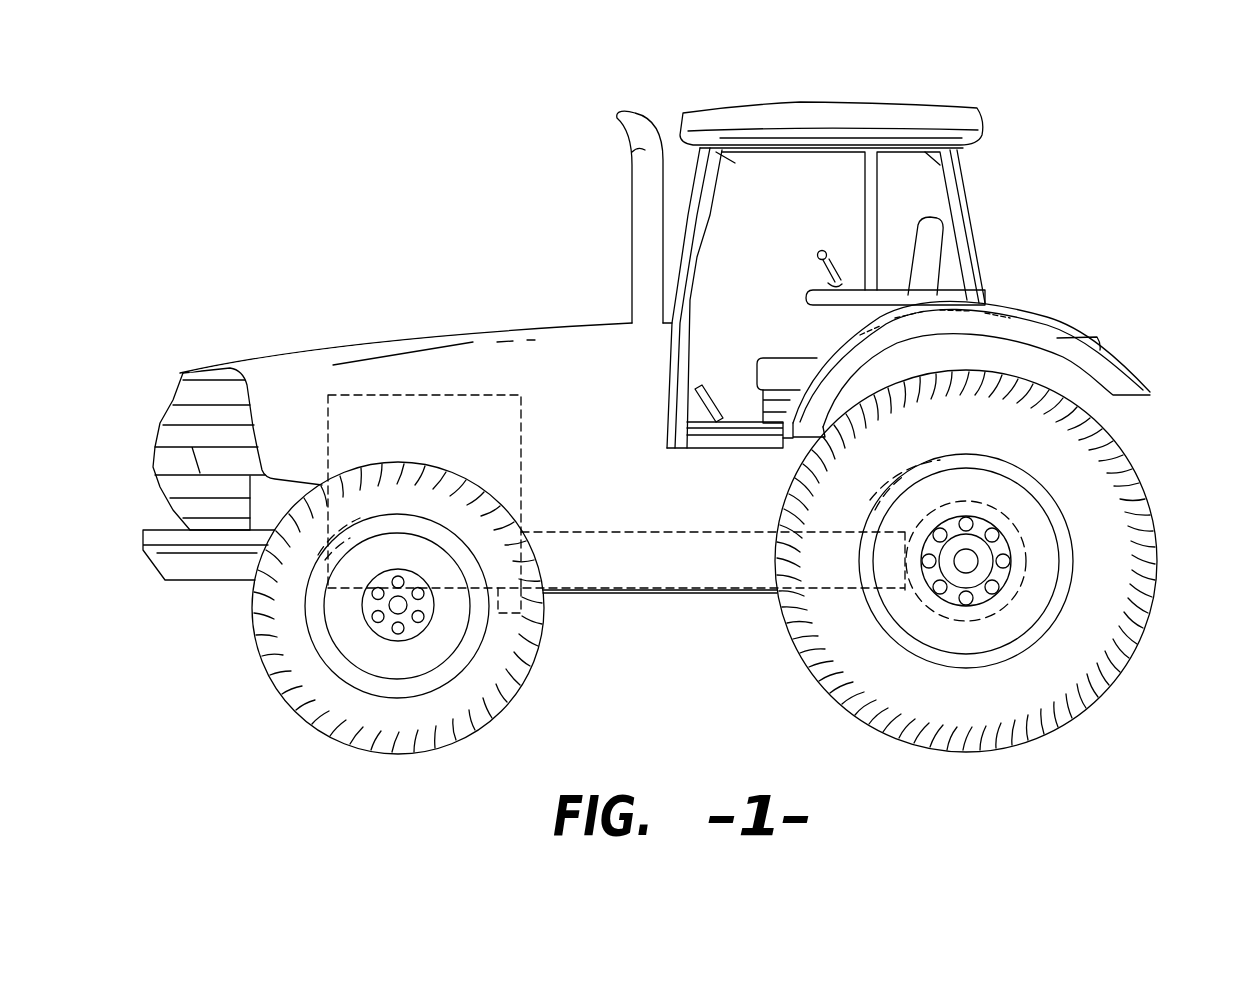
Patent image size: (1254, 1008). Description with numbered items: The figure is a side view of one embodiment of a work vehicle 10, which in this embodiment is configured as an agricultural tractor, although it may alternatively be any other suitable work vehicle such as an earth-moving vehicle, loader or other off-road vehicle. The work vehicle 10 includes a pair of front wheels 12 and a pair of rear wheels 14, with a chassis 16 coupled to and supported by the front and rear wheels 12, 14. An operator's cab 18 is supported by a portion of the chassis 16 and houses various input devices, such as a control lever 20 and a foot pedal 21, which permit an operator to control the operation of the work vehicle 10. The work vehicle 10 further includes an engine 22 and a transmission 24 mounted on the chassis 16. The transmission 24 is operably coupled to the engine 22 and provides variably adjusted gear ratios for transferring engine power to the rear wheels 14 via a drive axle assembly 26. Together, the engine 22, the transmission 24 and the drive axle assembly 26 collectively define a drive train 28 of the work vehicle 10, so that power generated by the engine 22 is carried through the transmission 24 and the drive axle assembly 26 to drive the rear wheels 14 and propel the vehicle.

The work vehicle 10 is at (330, 238).
The front wheels 12 is at (253, 627).
The rear wheels 14 is at (1155, 592).
The chassis 16 is at (607, 595).
The operator's cab 18 is at (973, 227).
The control lever 20 is at (818, 250).
The foot pedal 21 is at (720, 405).
The engine 22 is at (400, 395).
The transmission 24 is at (668, 530).
The drive axle assembly 26 is at (1077, 560).
The drive train 28 is at (578, 357).